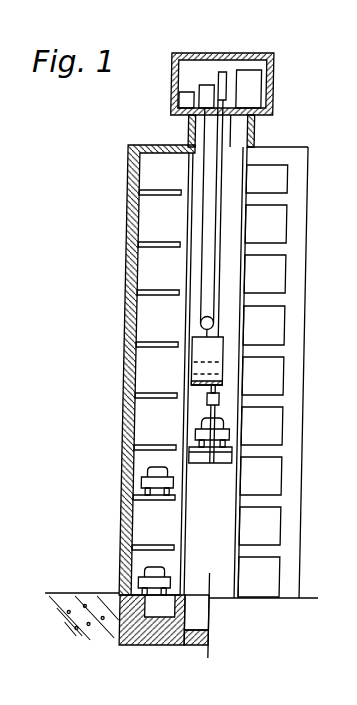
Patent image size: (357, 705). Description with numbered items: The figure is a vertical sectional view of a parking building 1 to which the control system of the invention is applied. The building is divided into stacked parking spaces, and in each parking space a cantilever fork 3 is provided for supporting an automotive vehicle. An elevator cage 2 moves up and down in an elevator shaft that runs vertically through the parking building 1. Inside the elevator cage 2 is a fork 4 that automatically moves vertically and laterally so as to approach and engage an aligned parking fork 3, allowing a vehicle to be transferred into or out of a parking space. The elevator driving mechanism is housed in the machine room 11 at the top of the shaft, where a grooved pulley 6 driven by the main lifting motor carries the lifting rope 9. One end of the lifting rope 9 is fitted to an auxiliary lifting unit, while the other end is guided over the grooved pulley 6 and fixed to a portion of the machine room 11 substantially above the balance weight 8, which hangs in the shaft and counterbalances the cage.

The parking building 1 is at (128, 163).
The elevator cage 2 is at (206, 463).
The cantilever fork 3 is at (153, 193).
The fork 4 is at (233, 448).
The grooved pulley 6 is at (220, 72).
The balance weight 8 is at (227, 352).
The lifting rope 9 is at (223, 190).
The machine room 11 is at (272, 88).